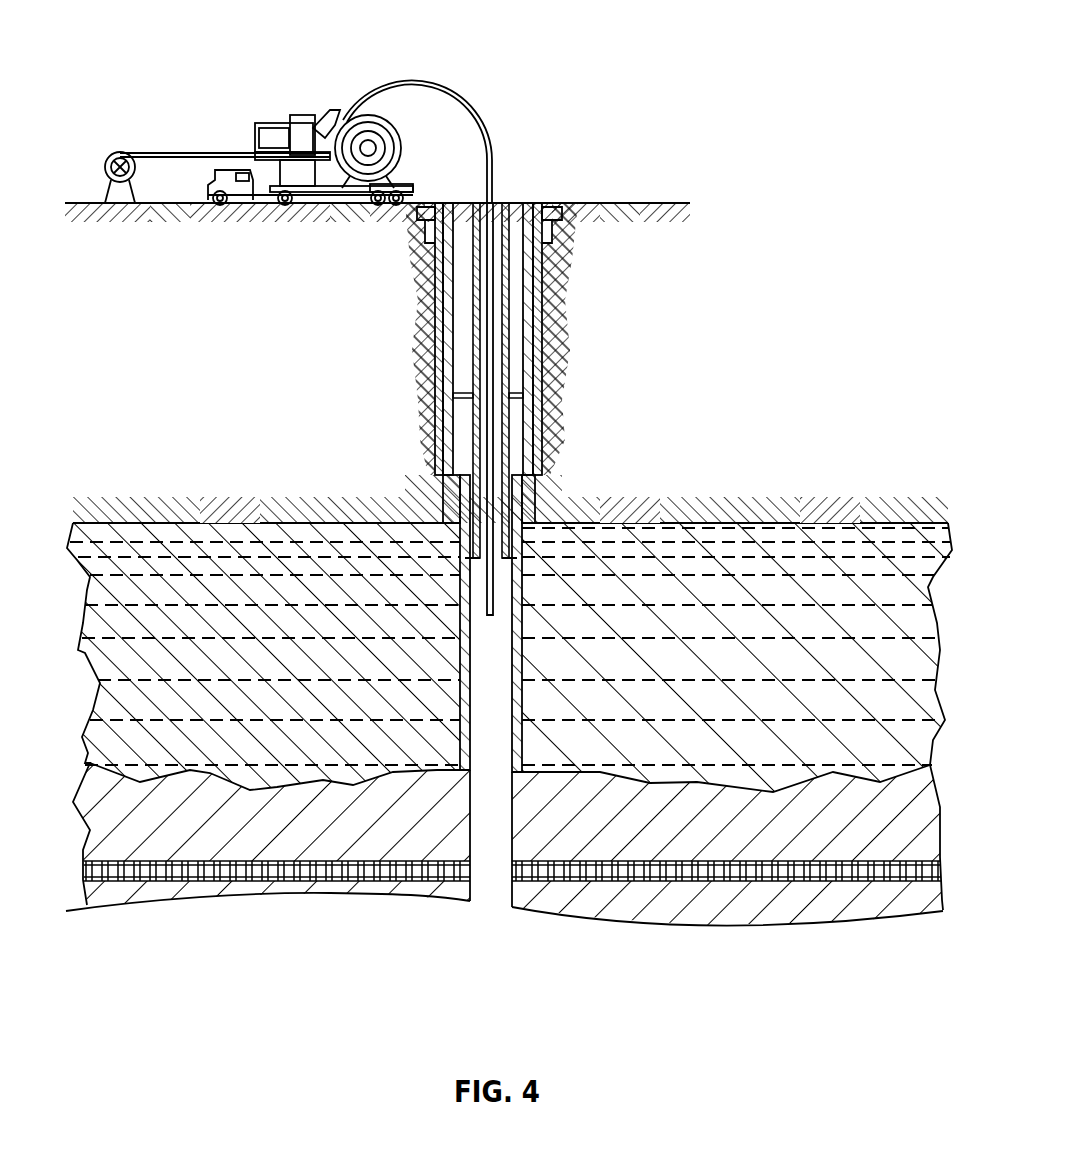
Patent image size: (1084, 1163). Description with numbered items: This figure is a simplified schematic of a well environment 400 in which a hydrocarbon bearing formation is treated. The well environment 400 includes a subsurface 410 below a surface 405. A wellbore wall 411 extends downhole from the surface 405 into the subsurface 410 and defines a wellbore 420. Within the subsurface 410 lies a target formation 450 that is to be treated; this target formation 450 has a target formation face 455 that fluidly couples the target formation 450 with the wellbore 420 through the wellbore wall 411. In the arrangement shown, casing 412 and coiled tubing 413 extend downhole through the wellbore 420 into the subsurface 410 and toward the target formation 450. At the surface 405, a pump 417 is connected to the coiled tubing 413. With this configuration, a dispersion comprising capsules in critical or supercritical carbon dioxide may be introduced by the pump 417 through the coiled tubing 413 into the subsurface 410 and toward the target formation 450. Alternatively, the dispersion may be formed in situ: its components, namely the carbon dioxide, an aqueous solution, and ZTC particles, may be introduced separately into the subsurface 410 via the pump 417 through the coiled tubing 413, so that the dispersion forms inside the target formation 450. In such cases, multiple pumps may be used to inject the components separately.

The well environment 400 is at (775, 98).
The surface 405 is at (665, 163).
The subsurface 410 is at (668, 604).
The wellbore wall 411 is at (540, 451).
The casing 412 is at (508, 300).
The coiled tubing 413 is at (368, 115).
The pump 417 is at (104, 166).
The wellbore 420 is at (471, 835).
The target formation 450 is at (944, 871).
The target formation face 455 is at (508, 870).